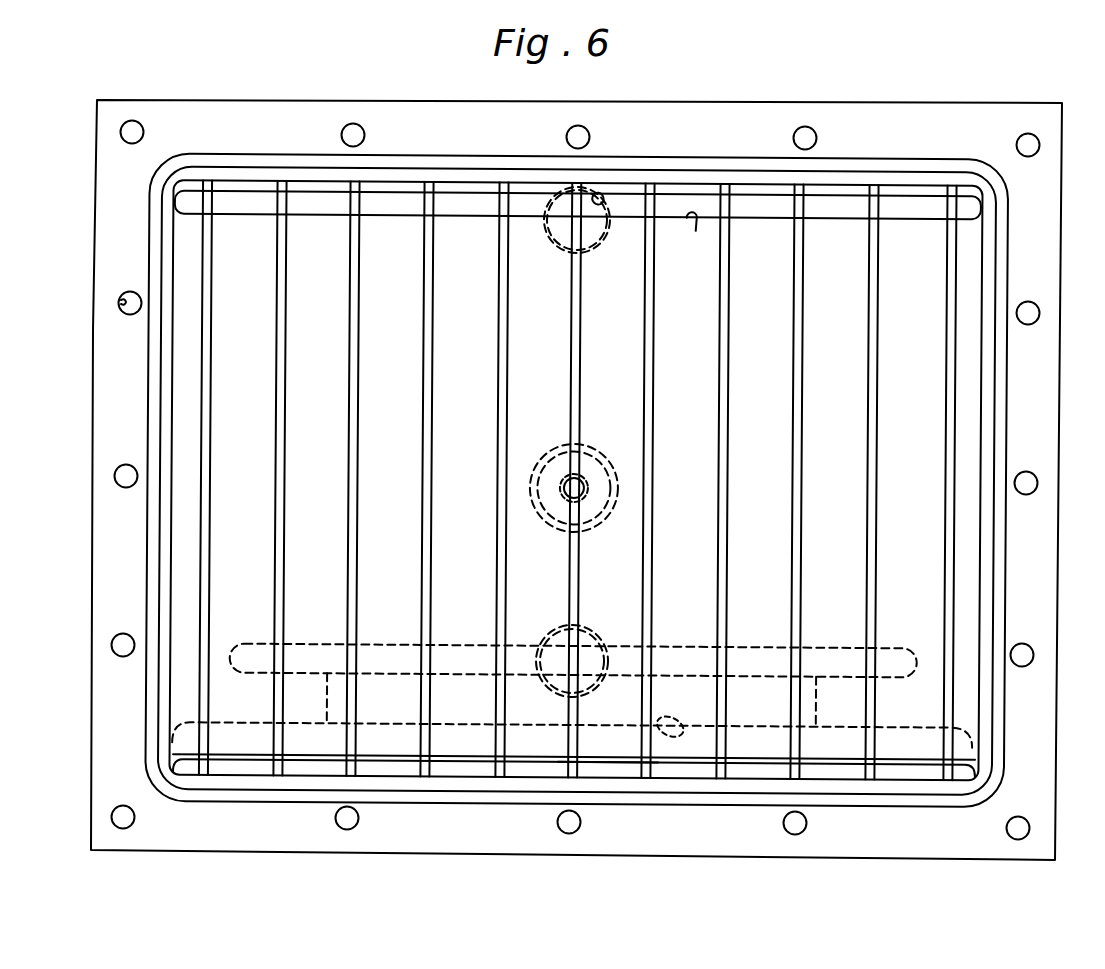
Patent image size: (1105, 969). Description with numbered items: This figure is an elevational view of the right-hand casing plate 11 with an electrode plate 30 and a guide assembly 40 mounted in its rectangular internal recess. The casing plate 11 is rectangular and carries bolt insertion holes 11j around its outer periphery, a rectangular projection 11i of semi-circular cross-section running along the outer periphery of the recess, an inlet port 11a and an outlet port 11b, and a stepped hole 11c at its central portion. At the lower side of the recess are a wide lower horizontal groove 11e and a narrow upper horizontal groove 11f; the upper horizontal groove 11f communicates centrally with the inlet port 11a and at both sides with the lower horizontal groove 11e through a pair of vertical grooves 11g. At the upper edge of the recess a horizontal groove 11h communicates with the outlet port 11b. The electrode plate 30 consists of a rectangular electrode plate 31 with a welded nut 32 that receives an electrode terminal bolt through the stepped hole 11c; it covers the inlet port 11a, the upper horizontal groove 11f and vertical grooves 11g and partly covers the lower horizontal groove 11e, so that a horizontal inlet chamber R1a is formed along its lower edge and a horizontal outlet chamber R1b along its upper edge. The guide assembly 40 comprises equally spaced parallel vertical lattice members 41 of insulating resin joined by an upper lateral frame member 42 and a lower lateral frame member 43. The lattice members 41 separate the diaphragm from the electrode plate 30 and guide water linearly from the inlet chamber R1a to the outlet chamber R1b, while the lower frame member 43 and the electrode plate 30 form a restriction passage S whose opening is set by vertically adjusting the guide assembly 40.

The right-hand casing plate 11 is at (1045, 629).
The inlet port 11a is at (586, 645).
The outlet port 11b is at (600, 192).
The stepped hole 11c is at (588, 450).
The lower horizontal groove 11e is at (668, 722).
The upper horizontal groove 11f is at (676, 645).
The vertical grooves 11g is at (328, 703).
The horizontal groove 11h is at (691, 238).
The rectangular projection 11i is at (150, 367).
The bolt insertion holes 11j is at (121, 306).
The electrode plate 30 is at (968, 385).
The rectangular electrode plate 31 is at (698, 388).
The nut 32 is at (598, 510).
The guide assembly 40 is at (955, 256).
The vertical lattice members 41 is at (803, 374).
The upper lateral frame member 42 is at (750, 192).
The lower lateral frame member 43 is at (753, 770).
The restriction passage S is at (614, 764).
The horizontal inlet chamber R1a is at (460, 732).
The horizontal outlet chamber R1b is at (468, 200).